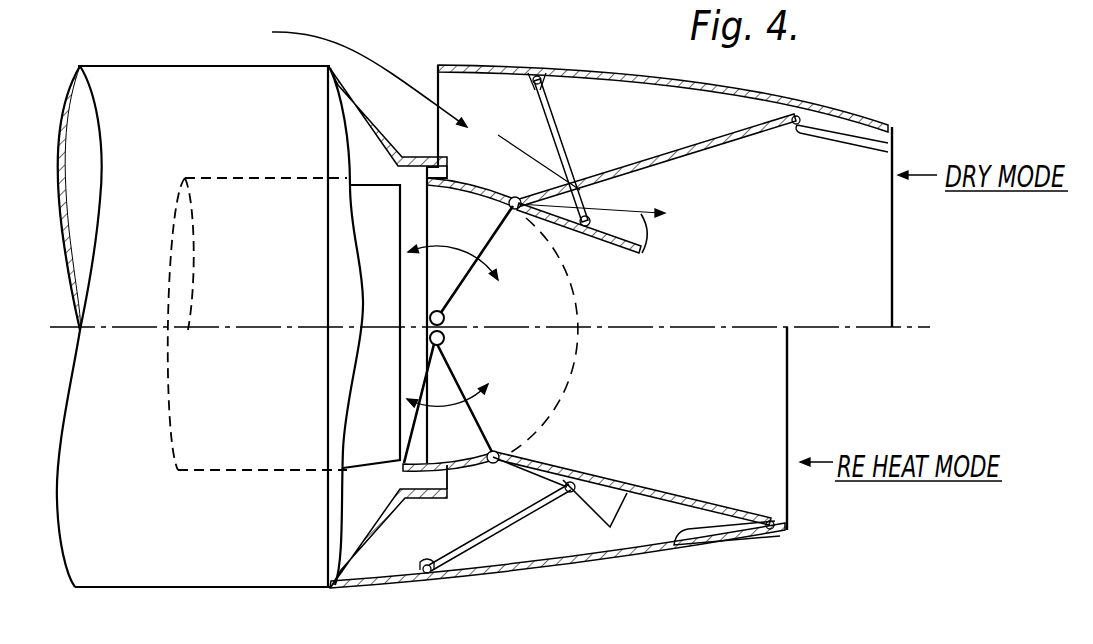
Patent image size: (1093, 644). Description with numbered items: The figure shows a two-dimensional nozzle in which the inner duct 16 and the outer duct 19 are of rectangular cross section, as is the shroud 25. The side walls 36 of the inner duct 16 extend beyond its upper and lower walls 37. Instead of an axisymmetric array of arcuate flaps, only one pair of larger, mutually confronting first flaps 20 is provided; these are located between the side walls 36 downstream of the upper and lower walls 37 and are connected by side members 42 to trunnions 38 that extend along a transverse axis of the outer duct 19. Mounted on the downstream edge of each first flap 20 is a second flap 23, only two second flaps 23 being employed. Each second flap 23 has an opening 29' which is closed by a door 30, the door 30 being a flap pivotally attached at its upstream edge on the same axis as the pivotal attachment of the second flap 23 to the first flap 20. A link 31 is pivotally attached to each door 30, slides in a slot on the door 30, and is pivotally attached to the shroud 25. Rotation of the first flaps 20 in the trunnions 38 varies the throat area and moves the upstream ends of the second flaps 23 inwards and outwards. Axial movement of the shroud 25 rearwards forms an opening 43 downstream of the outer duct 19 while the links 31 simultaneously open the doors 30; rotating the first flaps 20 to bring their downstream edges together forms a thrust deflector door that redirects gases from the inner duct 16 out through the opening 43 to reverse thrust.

The outer duct 19 is at (206, 125).
The inner duct 16 is at (270, 190).
The opening 43 is at (400, 74).
The shroud 25 is at (607, 59).
The link 31 is at (550, 113).
The opening 29' is at (656, 160).
The second flap 23 is at (700, 150).
The first flap 20 is at (512, 197).
The side member 42 is at (484, 254).
The trunnion 38 is at (447, 317).
The door 30 is at (635, 250).
The side wall 36 is at (410, 273).
The upper and lower wall 37 is at (378, 142).